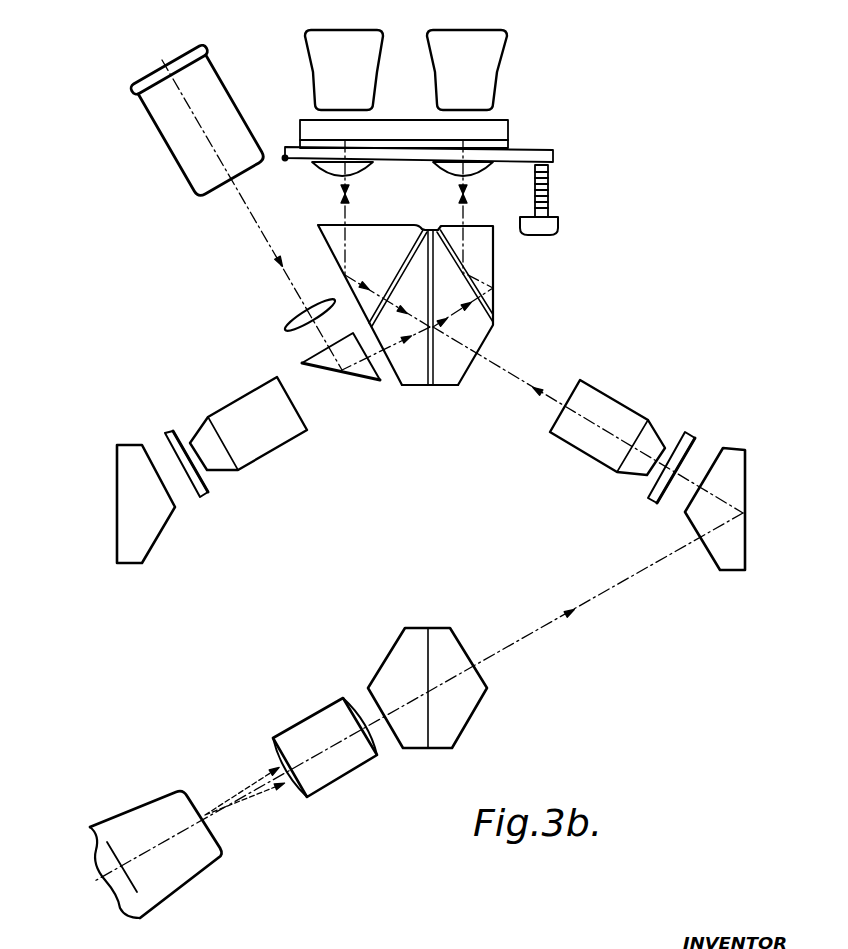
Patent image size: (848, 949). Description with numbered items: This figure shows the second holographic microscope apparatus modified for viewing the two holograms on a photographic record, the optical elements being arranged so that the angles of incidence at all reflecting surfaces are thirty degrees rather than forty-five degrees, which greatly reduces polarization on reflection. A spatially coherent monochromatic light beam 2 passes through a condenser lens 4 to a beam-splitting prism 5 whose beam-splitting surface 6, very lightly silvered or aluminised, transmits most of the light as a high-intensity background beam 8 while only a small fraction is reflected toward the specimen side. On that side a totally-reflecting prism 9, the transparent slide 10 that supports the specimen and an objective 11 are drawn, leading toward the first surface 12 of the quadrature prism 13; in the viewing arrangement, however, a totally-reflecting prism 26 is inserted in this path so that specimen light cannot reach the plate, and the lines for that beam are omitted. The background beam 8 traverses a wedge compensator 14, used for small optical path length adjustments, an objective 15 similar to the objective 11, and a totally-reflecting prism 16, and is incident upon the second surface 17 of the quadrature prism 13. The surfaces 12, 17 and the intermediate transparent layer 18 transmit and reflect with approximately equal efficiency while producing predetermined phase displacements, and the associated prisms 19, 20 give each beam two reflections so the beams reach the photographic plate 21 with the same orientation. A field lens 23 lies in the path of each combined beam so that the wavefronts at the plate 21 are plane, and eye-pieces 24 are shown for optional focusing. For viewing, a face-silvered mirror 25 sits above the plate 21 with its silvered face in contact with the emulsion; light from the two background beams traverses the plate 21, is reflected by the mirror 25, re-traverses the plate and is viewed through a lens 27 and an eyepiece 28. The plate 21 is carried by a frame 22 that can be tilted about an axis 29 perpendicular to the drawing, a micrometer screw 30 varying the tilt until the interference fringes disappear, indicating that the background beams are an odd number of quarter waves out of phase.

The light beam 2 is at (243, 813).
The condenser lens 4 is at (347, 763).
The beam-splitting prism 5 is at (462, 712).
The beam-splitting surface 6 is at (430, 635).
The background beam 8 is at (545, 623).
The totally-reflecting prism 9 is at (150, 522).
The transparent slide 10 is at (210, 492).
The objective 11 is at (248, 423).
The first surface 12 is at (422, 380).
The quadrature prism 13 is at (429, 309).
The wedge compensator 14 is at (687, 435).
The objective 15 is at (617, 413).
The totally-reflecting prism 16 is at (727, 458).
The second surface 17 is at (433, 370).
The intermediate transparent layer 18 is at (430, 348).
The prism 19 is at (367, 238).
The prism 20 is at (492, 258).
The photographic plate 21 is at (508, 145).
The frame 22 is at (557, 157).
The field lens 23 is at (330, 165).
The eye-pieces 24 is at (438, 43).
The face-silvered mirror 25 is at (502, 130).
The totally-reflecting prism 26 is at (367, 377).
The lens 27 is at (300, 313).
The eyepiece 28 is at (195, 173).
The axis 29 is at (285, 170).
The micrometer screw 30 is at (552, 197).